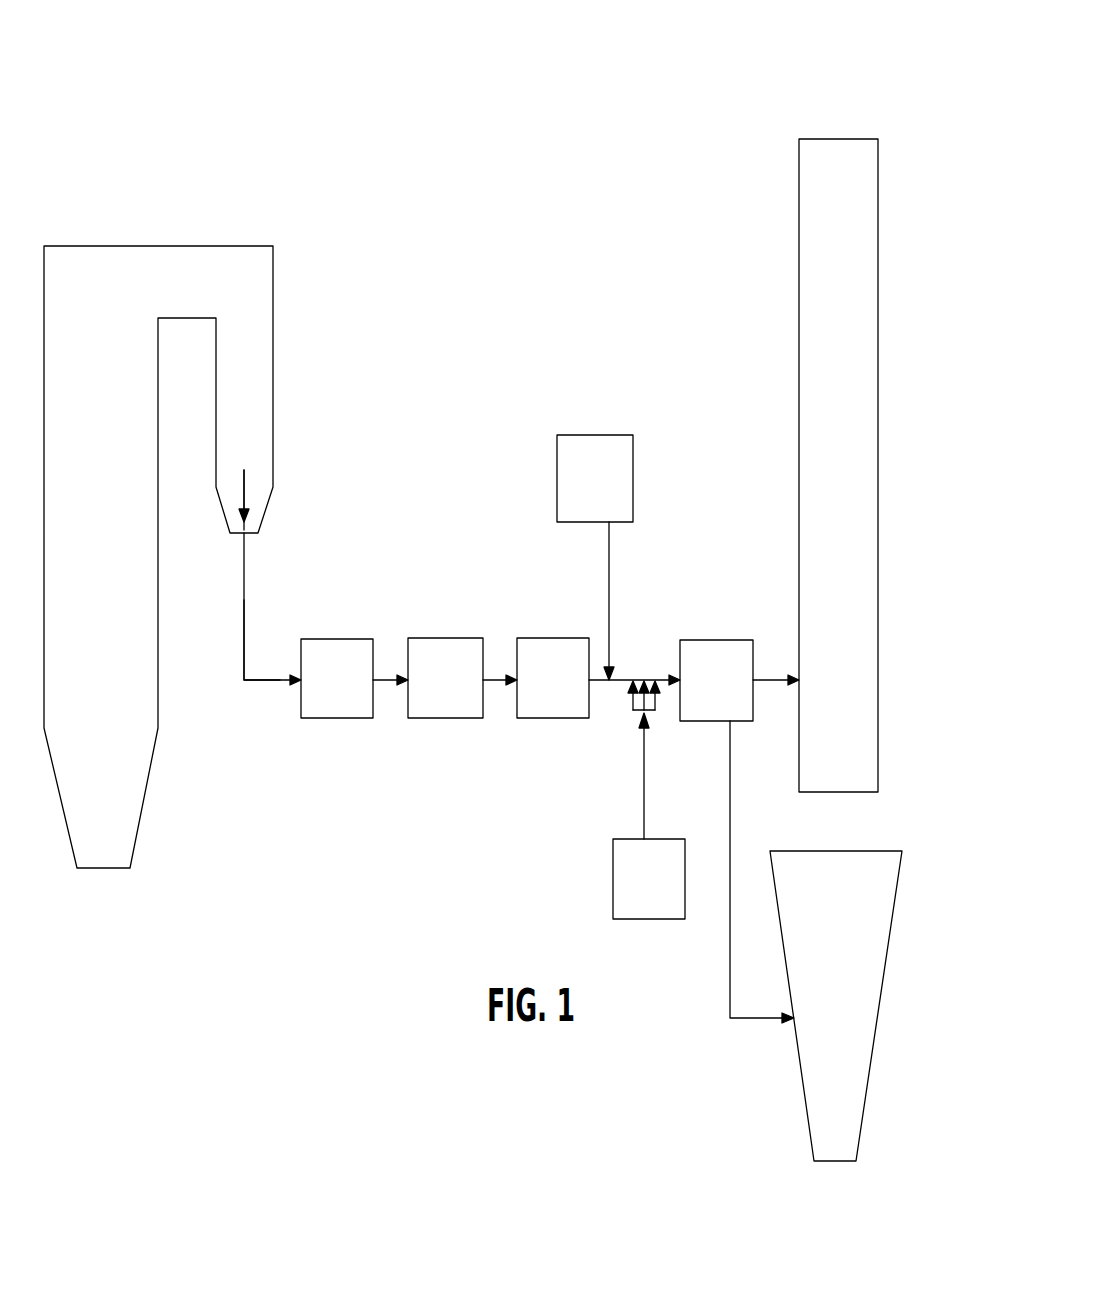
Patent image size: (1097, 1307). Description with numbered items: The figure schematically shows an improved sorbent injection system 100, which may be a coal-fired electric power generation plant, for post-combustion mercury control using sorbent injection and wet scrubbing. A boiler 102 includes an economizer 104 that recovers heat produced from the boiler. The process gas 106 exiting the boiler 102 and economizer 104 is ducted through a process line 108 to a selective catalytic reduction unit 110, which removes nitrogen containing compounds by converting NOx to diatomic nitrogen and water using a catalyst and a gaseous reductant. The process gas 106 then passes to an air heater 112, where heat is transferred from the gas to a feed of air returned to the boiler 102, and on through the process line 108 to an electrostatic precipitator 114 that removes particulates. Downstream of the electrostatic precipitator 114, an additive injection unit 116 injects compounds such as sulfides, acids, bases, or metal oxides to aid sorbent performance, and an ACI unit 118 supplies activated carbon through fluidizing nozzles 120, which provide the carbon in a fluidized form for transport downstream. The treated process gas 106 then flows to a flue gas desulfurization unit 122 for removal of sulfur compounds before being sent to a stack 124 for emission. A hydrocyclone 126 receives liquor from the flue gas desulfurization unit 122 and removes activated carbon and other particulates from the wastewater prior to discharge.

The improved sorbent injection system 100 is at (670, 170).
The boiler 102 is at (105, 270).
The economizer 104 is at (262, 340).
The process gas 106 is at (244, 500).
The process line 108 is at (258, 682).
The selective catalytic reduction unit 110 is at (358, 639).
The air heater 112 is at (443, 638).
The electrostatic precipitator 114 is at (550, 638).
The additive injection unit 116 is at (578, 435).
The ACI unit 118 is at (613, 878).
The fluidizing nozzles 120 is at (632, 713).
The flue gas desulfurization unit 122 is at (712, 640).
The stack 124 is at (799, 415).
The hydrocyclone 126 is at (887, 956).